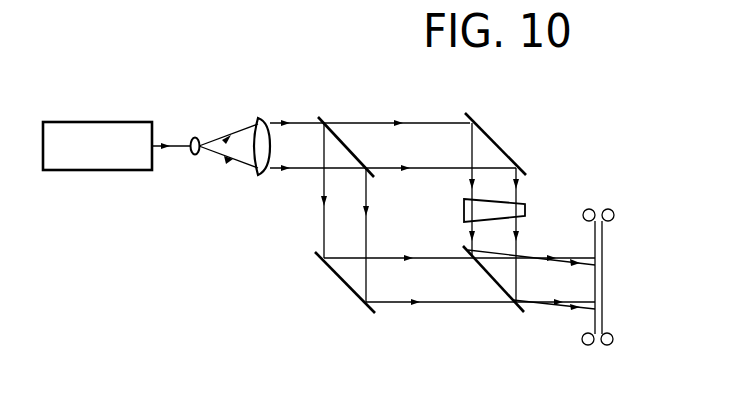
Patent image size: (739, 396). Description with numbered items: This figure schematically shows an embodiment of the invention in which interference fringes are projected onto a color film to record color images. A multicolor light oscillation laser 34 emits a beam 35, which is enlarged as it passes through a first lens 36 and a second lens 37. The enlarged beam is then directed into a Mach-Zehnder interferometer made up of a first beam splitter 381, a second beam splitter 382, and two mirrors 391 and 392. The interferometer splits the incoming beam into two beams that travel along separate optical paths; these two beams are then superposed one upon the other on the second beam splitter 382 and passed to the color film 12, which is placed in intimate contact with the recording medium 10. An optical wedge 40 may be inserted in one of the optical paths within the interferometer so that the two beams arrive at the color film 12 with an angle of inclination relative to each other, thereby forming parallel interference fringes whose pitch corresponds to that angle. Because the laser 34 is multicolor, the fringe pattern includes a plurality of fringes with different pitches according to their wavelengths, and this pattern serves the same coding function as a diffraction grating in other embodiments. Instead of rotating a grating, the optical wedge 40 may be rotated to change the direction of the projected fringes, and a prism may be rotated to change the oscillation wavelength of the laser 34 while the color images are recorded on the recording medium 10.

The multicolor light oscillation laser 34 is at (93, 160).
The beam 35 is at (178, 150).
The lens 36 is at (194, 137).
The lens 37 is at (238, 118).
The beam splitter 381 is at (319, 116).
The beam splitter 382 is at (514, 309).
The mirror 391 is at (341, 282).
The mirror 392 is at (483, 130).
The optical wedge 40 is at (526, 210).
The recording medium 10 is at (607, 346).
The color film 12 is at (583, 342).